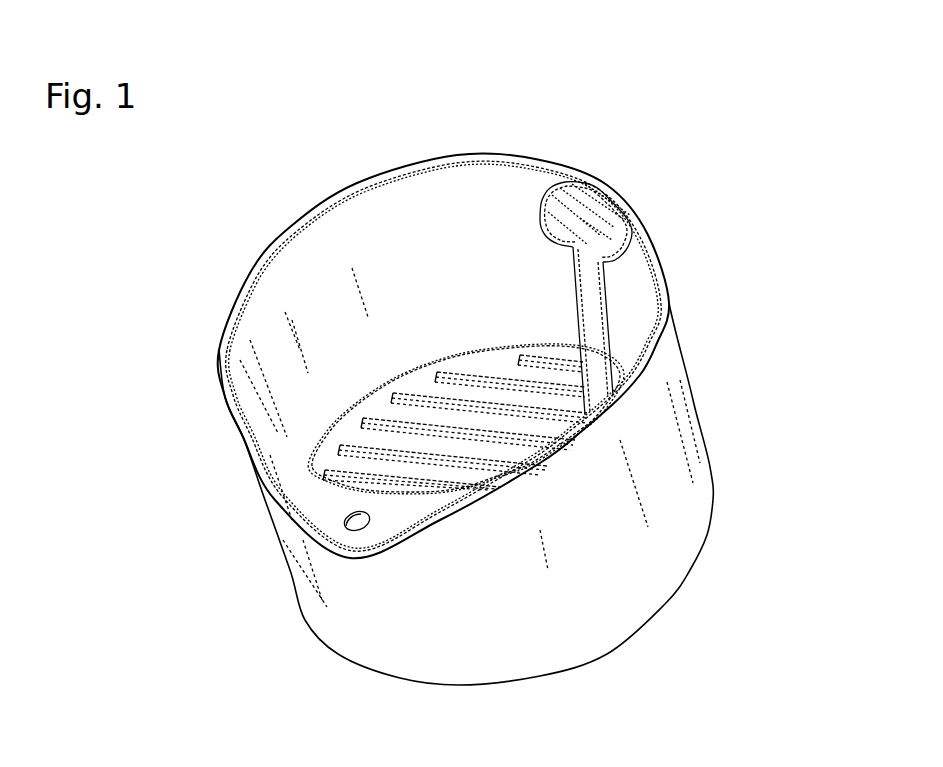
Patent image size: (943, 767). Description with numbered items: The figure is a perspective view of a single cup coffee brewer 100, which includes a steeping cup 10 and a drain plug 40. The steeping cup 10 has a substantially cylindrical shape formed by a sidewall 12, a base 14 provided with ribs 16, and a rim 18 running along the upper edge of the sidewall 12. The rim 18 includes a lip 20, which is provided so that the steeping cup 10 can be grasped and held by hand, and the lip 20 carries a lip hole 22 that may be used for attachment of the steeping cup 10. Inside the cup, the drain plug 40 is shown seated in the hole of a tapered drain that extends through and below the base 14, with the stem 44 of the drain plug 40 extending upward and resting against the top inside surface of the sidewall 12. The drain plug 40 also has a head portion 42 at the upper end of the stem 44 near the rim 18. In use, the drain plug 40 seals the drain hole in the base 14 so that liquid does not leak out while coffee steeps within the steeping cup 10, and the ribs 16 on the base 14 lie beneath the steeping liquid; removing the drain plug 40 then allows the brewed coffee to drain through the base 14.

The single cup coffee brewer 100 is at (725, 157).
The steeping cup 10 is at (171, 584).
The sidewall 12 is at (657, 437).
The base 14 is at (493, 365).
The ribs 16 is at (365, 425).
The rim 18 is at (220, 347).
The lip 20 is at (407, 510).
The lip hole 22 is at (355, 523).
The drain plug 40 is at (592, 120).
The pad 42 is at (593, 236).
The stem 44 is at (597, 312).